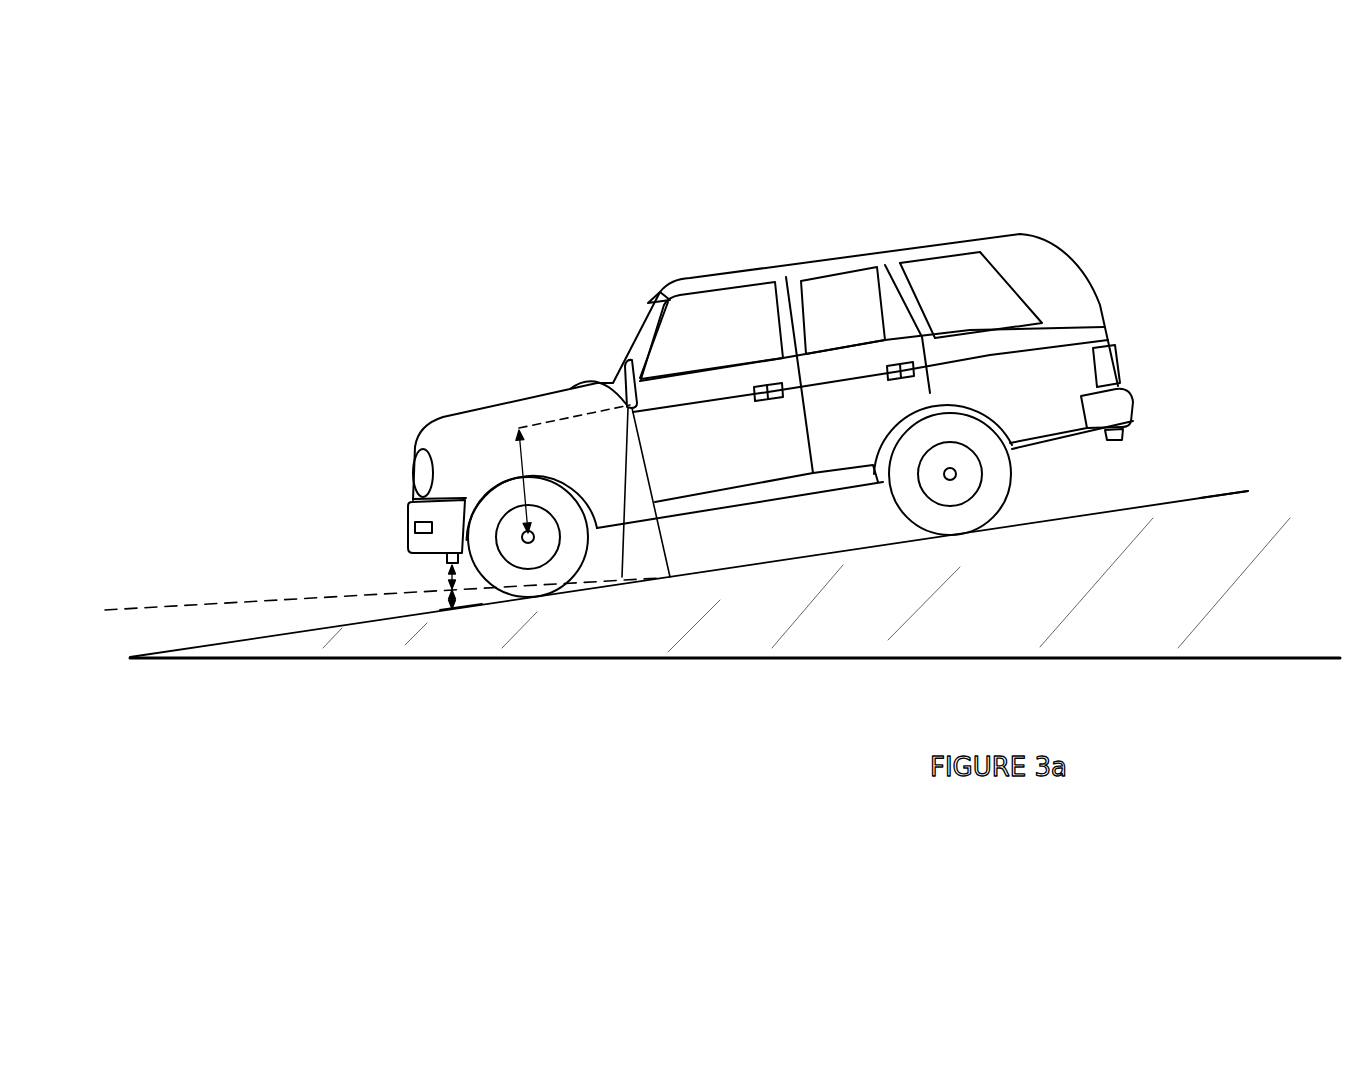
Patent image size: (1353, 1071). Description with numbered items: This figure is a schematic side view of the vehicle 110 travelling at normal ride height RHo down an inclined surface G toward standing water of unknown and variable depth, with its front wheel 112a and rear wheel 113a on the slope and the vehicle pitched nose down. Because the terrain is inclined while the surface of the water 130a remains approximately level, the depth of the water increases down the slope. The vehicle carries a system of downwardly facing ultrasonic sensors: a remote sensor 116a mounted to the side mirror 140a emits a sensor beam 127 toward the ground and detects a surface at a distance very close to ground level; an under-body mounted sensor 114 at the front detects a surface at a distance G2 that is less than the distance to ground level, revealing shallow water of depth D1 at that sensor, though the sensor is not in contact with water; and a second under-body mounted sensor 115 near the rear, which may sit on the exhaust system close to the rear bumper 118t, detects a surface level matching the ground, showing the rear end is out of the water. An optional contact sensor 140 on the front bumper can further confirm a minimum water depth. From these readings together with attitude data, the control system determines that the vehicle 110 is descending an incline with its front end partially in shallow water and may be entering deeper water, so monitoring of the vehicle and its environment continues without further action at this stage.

The vehicle 110 is at (1128, 270).
The front wheel 112a is at (537, 590).
The rear wheel 113a is at (955, 517).
The under-body mounted sensor 114 is at (448, 557).
The under-body mounted sensor 115 is at (1113, 433).
The remote sensor 116a is at (625, 405).
The rear bumper 118t is at (1140, 422).
The sensor beam 127 is at (641, 552).
The surface of the water 130a is at (243, 603).
The contact sensor 140 is at (412, 528).
The side mirror 140a is at (620, 367).
The normal ride height RHo is at (512, 449).
The inclined surface G is at (1220, 490).
The distance to detected surface G2 is at (450, 574).
The water depth D1 is at (447, 598).